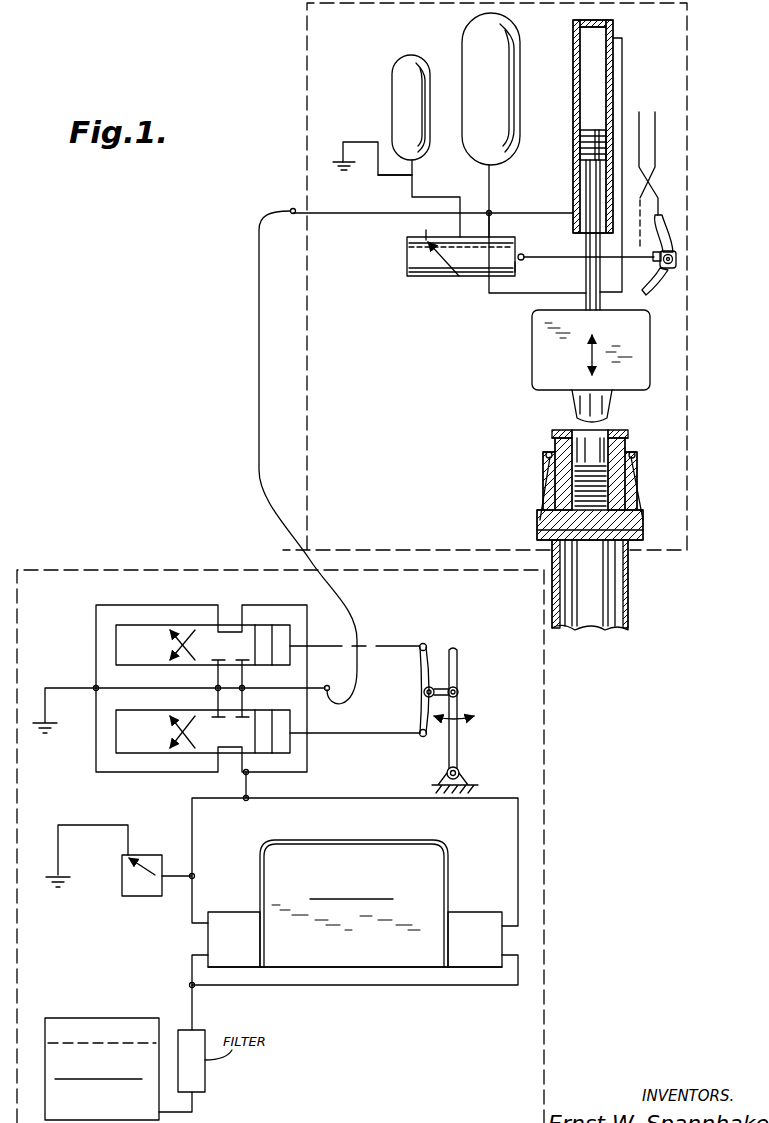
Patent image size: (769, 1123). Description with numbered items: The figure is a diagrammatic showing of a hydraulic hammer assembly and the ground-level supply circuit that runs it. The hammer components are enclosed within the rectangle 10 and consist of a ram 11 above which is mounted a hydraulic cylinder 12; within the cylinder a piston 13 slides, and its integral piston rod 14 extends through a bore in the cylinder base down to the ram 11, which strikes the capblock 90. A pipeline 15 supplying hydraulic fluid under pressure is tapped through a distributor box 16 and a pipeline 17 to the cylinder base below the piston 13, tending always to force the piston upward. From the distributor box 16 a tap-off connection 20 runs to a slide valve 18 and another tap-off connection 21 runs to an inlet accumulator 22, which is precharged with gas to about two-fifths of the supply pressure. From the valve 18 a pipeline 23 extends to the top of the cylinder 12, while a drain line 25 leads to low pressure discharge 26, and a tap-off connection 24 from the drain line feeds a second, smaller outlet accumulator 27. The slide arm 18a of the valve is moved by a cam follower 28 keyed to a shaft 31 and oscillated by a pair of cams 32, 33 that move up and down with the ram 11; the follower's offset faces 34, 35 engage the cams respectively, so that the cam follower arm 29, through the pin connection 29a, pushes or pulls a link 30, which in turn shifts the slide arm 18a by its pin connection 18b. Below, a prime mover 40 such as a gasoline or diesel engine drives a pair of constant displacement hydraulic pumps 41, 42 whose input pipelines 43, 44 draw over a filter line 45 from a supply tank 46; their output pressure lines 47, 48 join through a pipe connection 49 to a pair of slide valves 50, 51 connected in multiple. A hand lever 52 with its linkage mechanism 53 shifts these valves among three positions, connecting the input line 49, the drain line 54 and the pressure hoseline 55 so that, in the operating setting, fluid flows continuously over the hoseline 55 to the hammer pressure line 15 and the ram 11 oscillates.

The rectangle 10 is at (303, 153).
The ram 11 is at (532, 350).
The hydraulic cylinder 12 is at (573, 80).
The piston 13 is at (580, 135).
The piston rod 14 is at (586, 179).
The pipeline 15 is at (357, 218).
The distributor box 16 is at (494, 207).
The pipeline 17 is at (523, 212).
The slide valve 18 is at (407, 257).
The slide arm 18a is at (517, 268).
The pin connection 18b is at (524, 255).
The tap-off connection 20 is at (490, 225).
The tap-off connection 21 is at (489, 177).
The inlet accumulator 22 is at (462, 34).
The pipeline 23 is at (520, 294).
The tap-off connection 24 is at (413, 165).
The drain line 25 is at (410, 187).
The low pressure discharge 26 is at (342, 142).
The outlet accumulator 27 is at (398, 71).
The cam follower 28 is at (672, 240).
The cam follower arm 29 is at (668, 272).
The pin connection 29a is at (656, 252).
The link 30 is at (548, 259).
The shaft 31 is at (674, 259).
The cam 32 is at (657, 198).
The cam 33 is at (655, 140).
The cam follower face 34 is at (661, 218).
The cam follower face 35 is at (645, 292).
The prime mover 40 is at (347, 840).
The constant displacement hydraulic pump 41 is at (222, 912).
The constant displacement hydraulic pump 42 is at (468, 912).
The input pipeline 43 is at (186, 967).
The input pipeline 44 is at (341, 987).
The line 45 is at (193, 1009).
The supply tank 46 is at (97, 1018).
The output pressure line 47 is at (192, 833).
The output pressure line 48 is at (518, 827).
The pipe connection 49 is at (244, 786).
The slide valve 50 is at (203, 645).
The slide valve 51 is at (203, 731).
The hand lever 52 is at (460, 681).
The linkage mechanism 53 is at (383, 735).
The drain line 54 is at (66, 688).
The pressure hoseline 55 is at (358, 619).
The capblock 90 is at (548, 492).